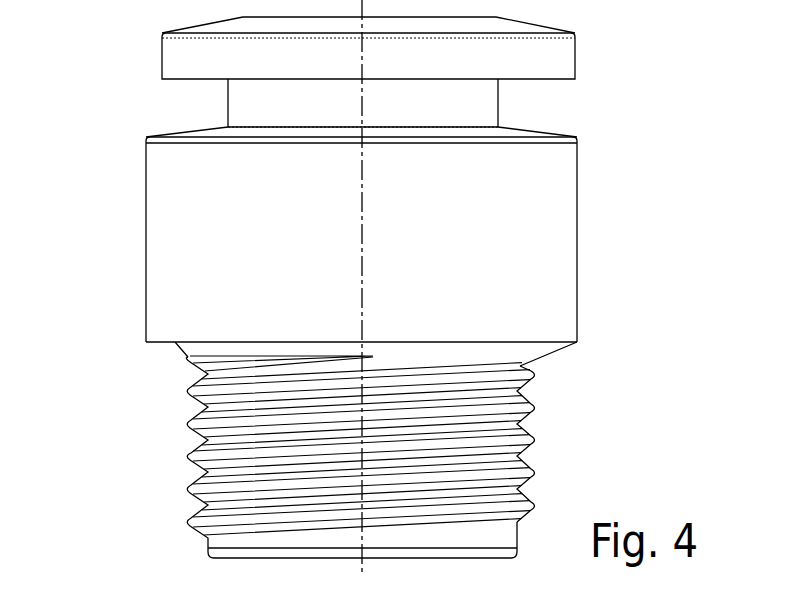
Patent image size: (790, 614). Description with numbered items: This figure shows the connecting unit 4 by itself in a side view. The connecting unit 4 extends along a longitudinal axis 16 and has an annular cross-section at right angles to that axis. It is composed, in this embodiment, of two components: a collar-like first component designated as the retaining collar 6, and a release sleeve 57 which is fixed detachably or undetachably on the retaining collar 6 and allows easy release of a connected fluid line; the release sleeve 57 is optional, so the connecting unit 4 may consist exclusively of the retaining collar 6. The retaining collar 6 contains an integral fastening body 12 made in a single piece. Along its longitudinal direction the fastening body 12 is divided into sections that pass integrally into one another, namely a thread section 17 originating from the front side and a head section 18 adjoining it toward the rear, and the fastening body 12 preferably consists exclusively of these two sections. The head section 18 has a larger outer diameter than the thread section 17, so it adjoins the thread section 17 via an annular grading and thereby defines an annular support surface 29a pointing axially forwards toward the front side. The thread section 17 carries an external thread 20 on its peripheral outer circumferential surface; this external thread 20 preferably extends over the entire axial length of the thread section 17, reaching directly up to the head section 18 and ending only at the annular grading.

The connecting unit 4 is at (645, 128).
The retaining collar 6 is at (576, 272).
The fastening body 12 is at (172, 306).
The longitudinal axis 16 is at (362, 242).
The thread section 17 is at (217, 453).
The head section 18 is at (180, 203).
The external thread 20 is at (550, 439).
The annular support surface 29a is at (564, 352).
The release sleeve 57 is at (168, 62).